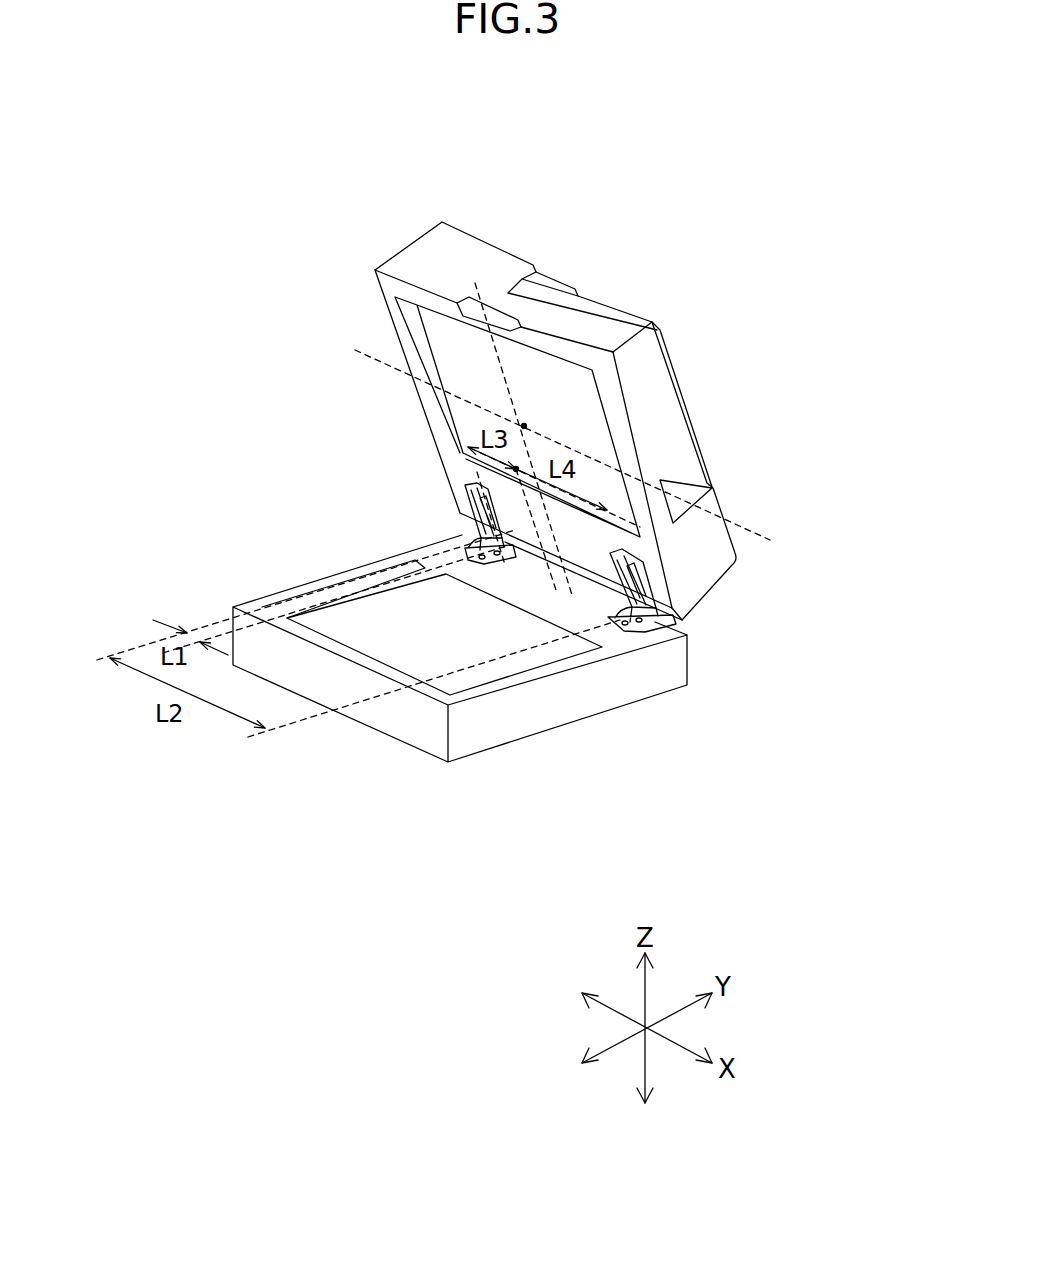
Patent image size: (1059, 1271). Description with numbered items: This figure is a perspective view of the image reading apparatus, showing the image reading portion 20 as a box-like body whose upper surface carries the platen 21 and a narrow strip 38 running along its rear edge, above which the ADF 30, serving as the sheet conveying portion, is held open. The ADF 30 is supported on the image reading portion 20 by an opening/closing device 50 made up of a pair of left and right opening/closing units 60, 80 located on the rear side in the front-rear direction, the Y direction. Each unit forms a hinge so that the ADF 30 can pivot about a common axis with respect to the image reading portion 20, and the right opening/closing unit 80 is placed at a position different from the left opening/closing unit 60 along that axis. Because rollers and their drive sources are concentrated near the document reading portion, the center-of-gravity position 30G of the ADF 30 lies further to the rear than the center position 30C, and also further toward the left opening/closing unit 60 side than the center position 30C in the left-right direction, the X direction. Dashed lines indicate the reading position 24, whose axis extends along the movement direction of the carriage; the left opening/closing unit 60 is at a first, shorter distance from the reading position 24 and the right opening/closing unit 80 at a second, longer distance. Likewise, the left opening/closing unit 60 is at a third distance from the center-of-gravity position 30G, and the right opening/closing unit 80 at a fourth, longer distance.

The image reading portion 20 is at (403, 764).
The platen glass 21 is at (385, 614).
The reading position 24 is at (134, 646).
The ADF 30 is at (680, 313).
The center position of the ADF 30C is at (524, 426).
The center-of-gravity position of the ADF 30G is at (516, 469).
The reading sensor strip 38 is at (395, 569).
The opening/closing device 50 is at (706, 630).
The left opening/closing unit 60 is at (475, 540).
The right opening/closing unit 80 is at (647, 628).